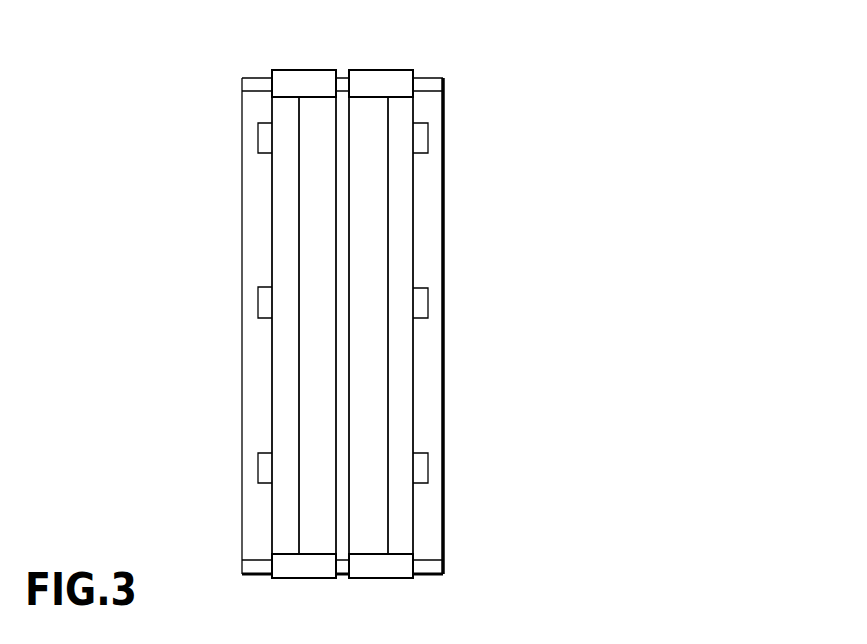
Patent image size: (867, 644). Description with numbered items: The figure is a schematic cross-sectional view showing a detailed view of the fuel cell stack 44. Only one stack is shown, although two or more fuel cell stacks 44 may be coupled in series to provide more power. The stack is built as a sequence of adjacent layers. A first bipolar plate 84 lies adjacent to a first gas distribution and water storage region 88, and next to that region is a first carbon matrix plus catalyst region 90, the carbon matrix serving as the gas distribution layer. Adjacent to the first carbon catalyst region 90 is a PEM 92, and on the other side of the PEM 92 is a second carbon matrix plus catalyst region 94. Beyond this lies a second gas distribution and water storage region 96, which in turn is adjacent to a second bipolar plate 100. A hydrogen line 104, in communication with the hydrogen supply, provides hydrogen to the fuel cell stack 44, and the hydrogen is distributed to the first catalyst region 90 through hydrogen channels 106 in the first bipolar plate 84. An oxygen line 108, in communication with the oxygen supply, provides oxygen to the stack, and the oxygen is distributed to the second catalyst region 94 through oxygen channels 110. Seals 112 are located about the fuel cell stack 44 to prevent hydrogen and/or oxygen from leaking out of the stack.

The fuel cell stack 44 is at (503, 79).
The first bipolar plate 84 is at (253, 417).
The first gas distribution and water storage region 88 is at (282, 268).
The first carbon matrix plus catalyst region 90 is at (312, 365).
The PEM 92 is at (343, 177).
The second carbon matrix plus catalyst region 94 is at (360, 492).
The second gas distribution and water storage region 96 is at (400, 357).
The second bipolar plate 100 is at (433, 538).
The hydrogen line 104 is at (252, 82).
The hydrogen channels 106 is at (257, 137).
The oxygen line 108 is at (242, 567).
The oxygen channels 110 is at (428, 137).
The seals 112 is at (367, 70).